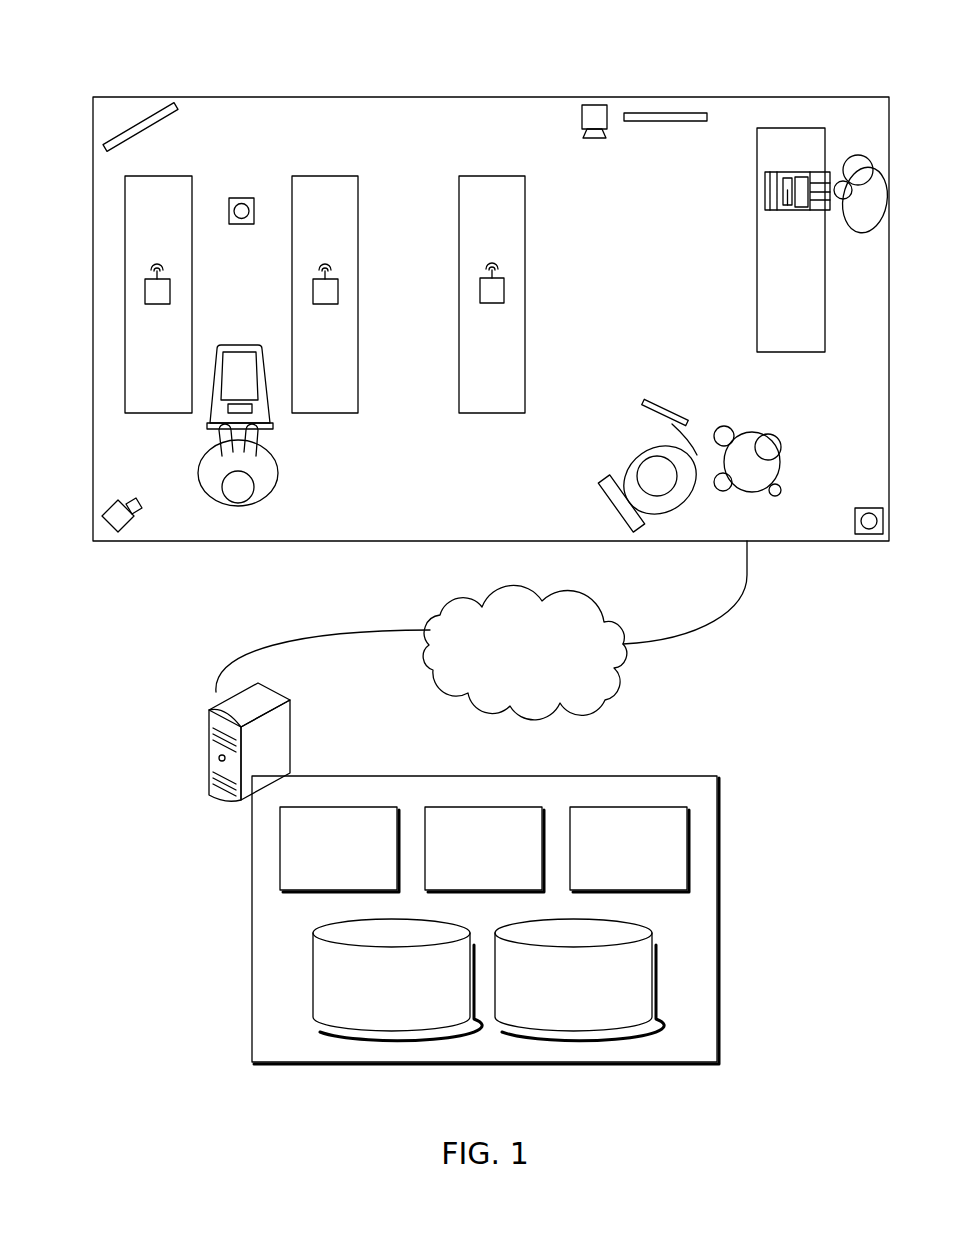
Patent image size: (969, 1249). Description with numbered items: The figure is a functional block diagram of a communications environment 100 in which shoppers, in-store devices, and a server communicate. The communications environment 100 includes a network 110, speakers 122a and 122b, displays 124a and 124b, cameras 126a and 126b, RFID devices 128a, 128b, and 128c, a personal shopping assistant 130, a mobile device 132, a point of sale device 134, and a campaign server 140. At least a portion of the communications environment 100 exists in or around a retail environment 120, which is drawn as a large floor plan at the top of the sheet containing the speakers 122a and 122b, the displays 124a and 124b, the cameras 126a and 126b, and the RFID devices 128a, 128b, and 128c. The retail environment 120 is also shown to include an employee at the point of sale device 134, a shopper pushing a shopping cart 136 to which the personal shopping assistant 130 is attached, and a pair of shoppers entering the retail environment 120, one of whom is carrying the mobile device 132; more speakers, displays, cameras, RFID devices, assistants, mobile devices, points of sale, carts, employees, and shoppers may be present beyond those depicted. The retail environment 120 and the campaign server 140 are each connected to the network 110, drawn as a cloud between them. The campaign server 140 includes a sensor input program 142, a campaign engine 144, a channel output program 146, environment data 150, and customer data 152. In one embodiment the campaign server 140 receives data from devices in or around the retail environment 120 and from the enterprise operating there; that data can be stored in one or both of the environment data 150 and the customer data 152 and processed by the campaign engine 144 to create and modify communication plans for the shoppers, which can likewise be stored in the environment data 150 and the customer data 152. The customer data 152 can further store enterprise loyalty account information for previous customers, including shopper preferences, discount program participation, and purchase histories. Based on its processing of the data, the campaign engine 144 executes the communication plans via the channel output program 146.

The communications environment 100 is at (770, 48).
The network 110 is at (530, 588).
The retail environment 120 is at (275, 541).
The speaker 122a is at (241, 198).
The speaker 122b is at (869, 508).
The display 124a is at (165, 114).
The display 124b is at (656, 121).
The camera 126a is at (135, 524).
The camera 126b is at (582, 110).
The RFID device 128a is at (170, 290).
The RFID device 128b is at (338, 290).
The RFID device 128c is at (504, 290).
The personal shopping assistant 130 is at (253, 408).
The mobile device 132 is at (679, 418).
The point of sale device 134 is at (765, 198).
The shopping cart 136 is at (227, 410).
The campaign server 140 is at (660, 776).
The sensor input program 142 is at (279, 841).
The campaign engine 144 is at (488, 807).
The channel output program 146 is at (689, 846).
The environment data 150 is at (397, 1033).
The customer data 152 is at (580, 1033).